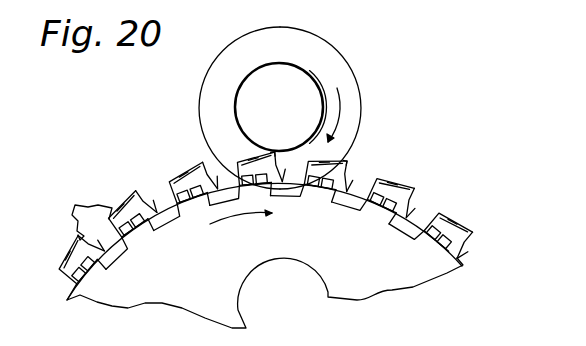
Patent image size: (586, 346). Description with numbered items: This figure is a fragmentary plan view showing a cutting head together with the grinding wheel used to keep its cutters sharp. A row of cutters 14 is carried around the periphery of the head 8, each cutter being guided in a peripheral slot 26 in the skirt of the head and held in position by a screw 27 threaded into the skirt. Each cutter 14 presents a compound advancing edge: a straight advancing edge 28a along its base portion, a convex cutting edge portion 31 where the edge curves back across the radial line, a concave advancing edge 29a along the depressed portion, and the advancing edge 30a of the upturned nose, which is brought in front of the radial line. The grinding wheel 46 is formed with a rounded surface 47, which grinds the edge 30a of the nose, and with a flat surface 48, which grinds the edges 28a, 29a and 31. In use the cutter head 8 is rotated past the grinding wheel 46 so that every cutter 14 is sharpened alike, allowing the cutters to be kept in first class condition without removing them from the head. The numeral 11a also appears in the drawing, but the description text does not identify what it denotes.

The head 8 is at (466, 262).
The cutter 14 is at (76, 205).
The tooth seat 11a is at (176, 224).
The peripheral slot 26 is at (142, 246).
The screw 27 is at (97, 270).
The advancing edge 28a is at (210, 184).
The advancing edge 29a is at (206, 165).
The advancing edge 30a is at (280, 157).
The convex cutting edge portion 31 is at (215, 170).
The grinding wheel 46 is at (360, 103).
The rounded surface 47 is at (216, 122).
The flat surface 48 is at (207, 100).